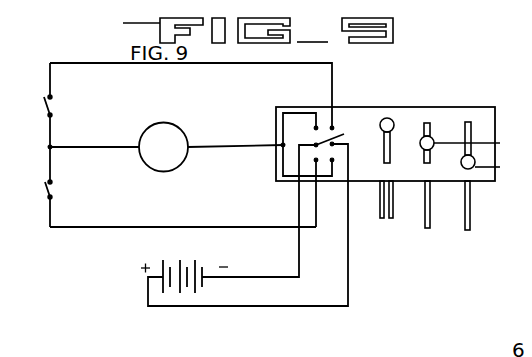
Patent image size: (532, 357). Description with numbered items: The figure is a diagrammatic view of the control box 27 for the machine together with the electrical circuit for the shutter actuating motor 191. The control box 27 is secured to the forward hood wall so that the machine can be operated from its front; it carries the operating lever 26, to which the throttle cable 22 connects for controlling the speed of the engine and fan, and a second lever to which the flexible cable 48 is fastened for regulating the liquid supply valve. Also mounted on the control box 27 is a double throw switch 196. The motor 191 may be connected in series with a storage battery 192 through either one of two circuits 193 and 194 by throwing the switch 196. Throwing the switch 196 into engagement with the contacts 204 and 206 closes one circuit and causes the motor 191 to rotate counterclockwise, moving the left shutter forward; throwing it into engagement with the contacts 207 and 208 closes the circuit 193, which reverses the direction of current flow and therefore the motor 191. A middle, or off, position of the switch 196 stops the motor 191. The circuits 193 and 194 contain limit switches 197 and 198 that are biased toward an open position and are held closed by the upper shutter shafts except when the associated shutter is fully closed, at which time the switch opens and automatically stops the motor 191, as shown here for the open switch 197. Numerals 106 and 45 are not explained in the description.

The circuit 193 is at (213, 63).
The circuit 194 is at (218, 228).
The limit switch 197 is at (54, 104).
The limit switch 198 is at (52, 186).
The motor 191 is at (193, 100).
The storage battery 192 is at (218, 235).
The control box 27 is at (518, 83).
The contact 207 is at (316, 128).
The contact 208 is at (333, 128).
The double throw switch 196 is at (344, 135).
The contact 204 is at (316, 160).
The contact 206 is at (332, 160).
The indicator lamp 106 is at (392, 206).
The cable 22 is at (428, 216).
The operating lever 26 is at (482, 144).
The flexible cable 48 is at (472, 205).
The lead wire 45 is at (503, 168).